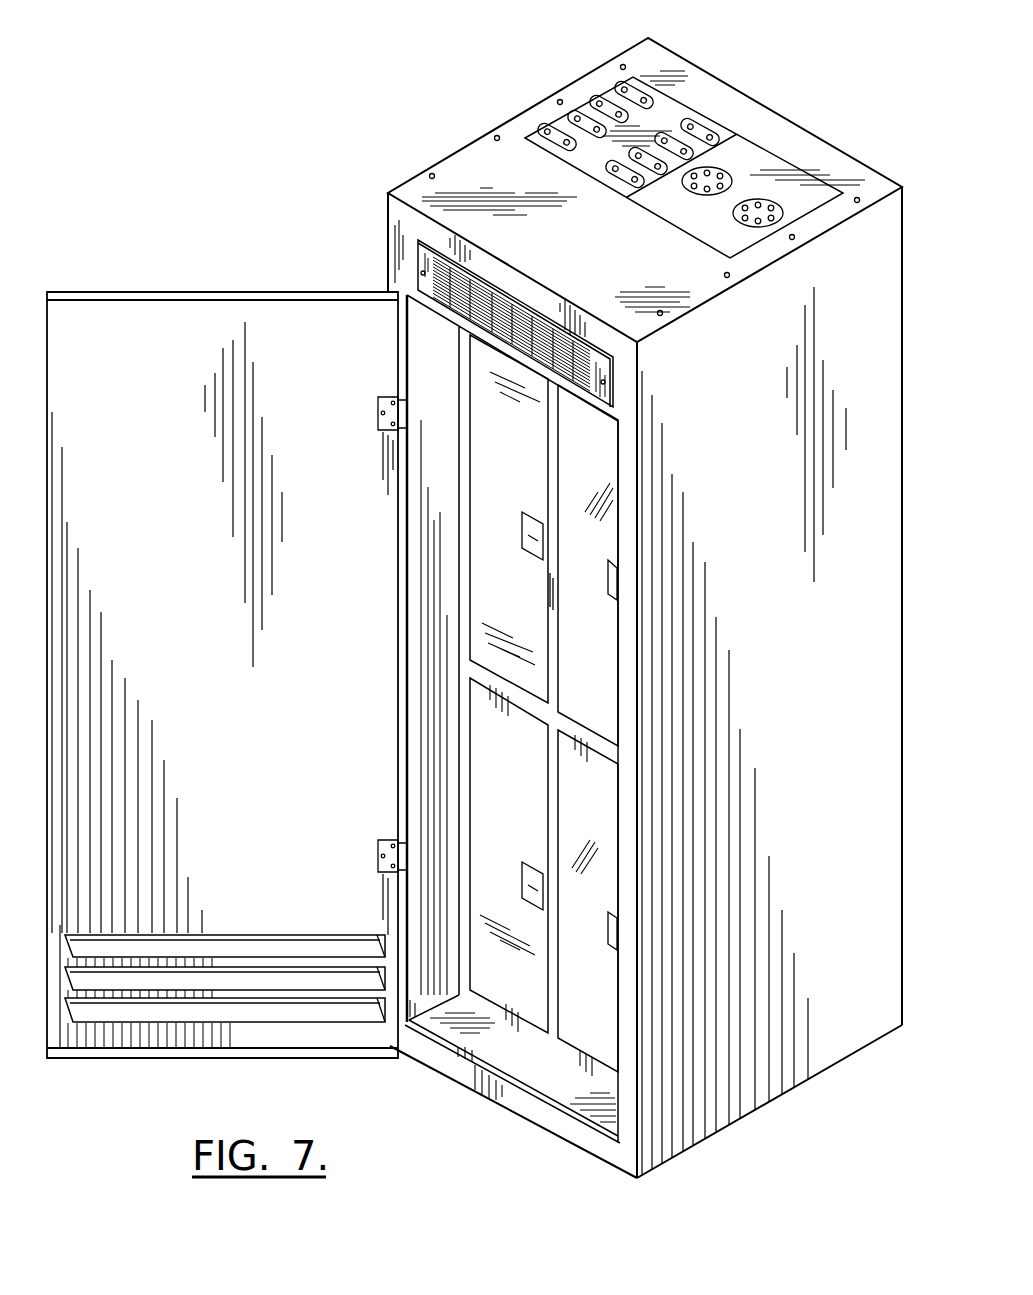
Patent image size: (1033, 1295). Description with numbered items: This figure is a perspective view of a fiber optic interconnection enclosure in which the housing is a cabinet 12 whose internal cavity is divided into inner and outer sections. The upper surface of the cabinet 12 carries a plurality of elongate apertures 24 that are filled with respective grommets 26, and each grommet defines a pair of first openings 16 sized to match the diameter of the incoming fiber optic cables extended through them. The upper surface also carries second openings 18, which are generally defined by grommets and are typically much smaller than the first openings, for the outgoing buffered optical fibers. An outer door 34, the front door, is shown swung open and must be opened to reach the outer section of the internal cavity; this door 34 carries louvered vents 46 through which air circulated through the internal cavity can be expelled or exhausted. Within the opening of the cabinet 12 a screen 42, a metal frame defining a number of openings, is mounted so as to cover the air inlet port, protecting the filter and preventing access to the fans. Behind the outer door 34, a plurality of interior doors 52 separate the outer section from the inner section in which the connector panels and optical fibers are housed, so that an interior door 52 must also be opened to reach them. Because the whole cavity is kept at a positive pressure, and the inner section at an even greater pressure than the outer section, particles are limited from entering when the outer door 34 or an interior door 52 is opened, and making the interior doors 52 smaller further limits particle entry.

The cabinet 12 is at (710, 100).
The first openings 16 is at (645, 98).
The second openings 18 is at (713, 172).
The elongate apertures 24 is at (555, 132).
The grommets 26 is at (613, 168).
The door 34 is at (140, 320).
The screen 42 is at (428, 255).
The vents 46 is at (245, 1012).
The interior doors 52 is at (528, 990).